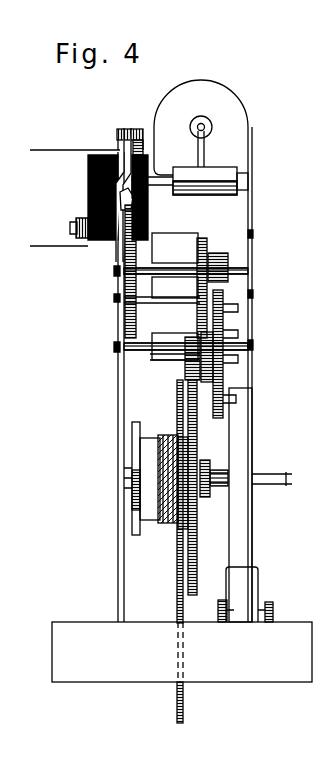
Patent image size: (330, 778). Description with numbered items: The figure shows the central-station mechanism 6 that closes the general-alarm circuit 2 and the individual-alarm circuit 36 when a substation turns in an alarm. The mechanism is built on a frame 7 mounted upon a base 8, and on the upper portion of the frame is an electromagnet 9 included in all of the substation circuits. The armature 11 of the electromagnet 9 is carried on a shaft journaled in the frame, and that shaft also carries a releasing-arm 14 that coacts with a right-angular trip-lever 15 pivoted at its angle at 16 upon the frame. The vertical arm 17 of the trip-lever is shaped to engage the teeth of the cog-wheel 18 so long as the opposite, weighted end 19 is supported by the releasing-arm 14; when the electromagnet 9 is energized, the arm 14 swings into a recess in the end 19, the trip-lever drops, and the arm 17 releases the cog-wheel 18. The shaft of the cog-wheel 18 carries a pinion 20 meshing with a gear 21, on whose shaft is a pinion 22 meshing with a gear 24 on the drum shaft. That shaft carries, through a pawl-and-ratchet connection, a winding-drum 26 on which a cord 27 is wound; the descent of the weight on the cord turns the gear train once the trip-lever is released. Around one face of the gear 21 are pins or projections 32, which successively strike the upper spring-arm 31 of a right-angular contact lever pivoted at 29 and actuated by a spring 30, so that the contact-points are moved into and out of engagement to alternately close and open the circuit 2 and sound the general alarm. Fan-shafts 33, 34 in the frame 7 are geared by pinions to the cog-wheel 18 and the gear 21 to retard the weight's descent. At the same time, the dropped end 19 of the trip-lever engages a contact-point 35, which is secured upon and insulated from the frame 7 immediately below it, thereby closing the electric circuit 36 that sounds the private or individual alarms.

The electric circuit 2 is at (258, 478).
The mechanism 6 is at (190, 291).
The frame 7 is at (251, 238).
The base 8 is at (172, 652).
The electromagnet 9 is at (245, 116).
The armature 11 is at (206, 118).
The releasing-arm 14 is at (139, 140).
The trip-lever 15 is at (131, 128).
The pivot 16 is at (122, 130).
The vertical arm 17 is at (133, 203).
The cog-wheel 18 is at (126, 228).
The end of trip-lever 19 is at (117, 134).
The pinion 20 is at (230, 264).
The gear 21 is at (224, 388).
The pinion 22 is at (192, 362).
The gear 24 is at (196, 532).
The winding-drum 26 is at (132, 524).
The cord 27 is at (177, 604).
The pivot 29 is at (273, 614).
The spring 30 is at (261, 580).
The spring-arm 31 is at (245, 526).
The pins or projections 32 is at (233, 372).
The fan-shaft 33 is at (250, 181).
The fan-shaft 34 is at (146, 300).
The contact-point 35 is at (105, 197).
The electric circuit 36 is at (42, 152).